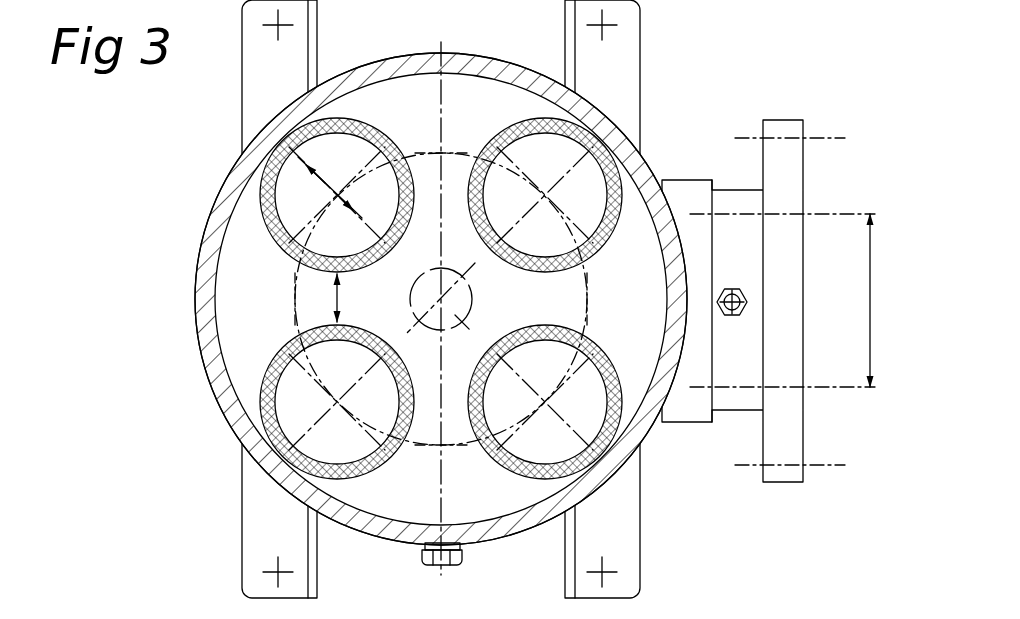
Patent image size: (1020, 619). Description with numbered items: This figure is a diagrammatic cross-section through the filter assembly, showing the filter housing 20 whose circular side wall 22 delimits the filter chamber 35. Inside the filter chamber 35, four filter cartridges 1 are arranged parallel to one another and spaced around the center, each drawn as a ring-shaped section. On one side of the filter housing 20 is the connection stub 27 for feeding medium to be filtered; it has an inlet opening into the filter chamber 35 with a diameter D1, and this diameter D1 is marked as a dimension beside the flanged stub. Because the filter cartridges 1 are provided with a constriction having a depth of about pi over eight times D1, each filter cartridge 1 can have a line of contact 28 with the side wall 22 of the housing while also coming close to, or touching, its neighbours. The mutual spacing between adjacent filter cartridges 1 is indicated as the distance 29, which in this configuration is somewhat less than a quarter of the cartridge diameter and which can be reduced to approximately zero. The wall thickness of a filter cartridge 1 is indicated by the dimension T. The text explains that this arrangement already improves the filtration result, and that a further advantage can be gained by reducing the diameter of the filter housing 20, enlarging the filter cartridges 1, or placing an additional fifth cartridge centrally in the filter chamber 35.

The filter cartridge 1 is at (275, 248).
The filter housing 20 is at (650, 138).
The side wall 22 is at (414, 65).
The connection stub 27 is at (688, 405).
The line of contact 28 is at (290, 144).
The distance 29 is at (339, 298).
The filter chamber 35 is at (400, 492).
The tube wall thickness T is at (332, 186).
The diameter of the inlet D1 is at (855, 300).